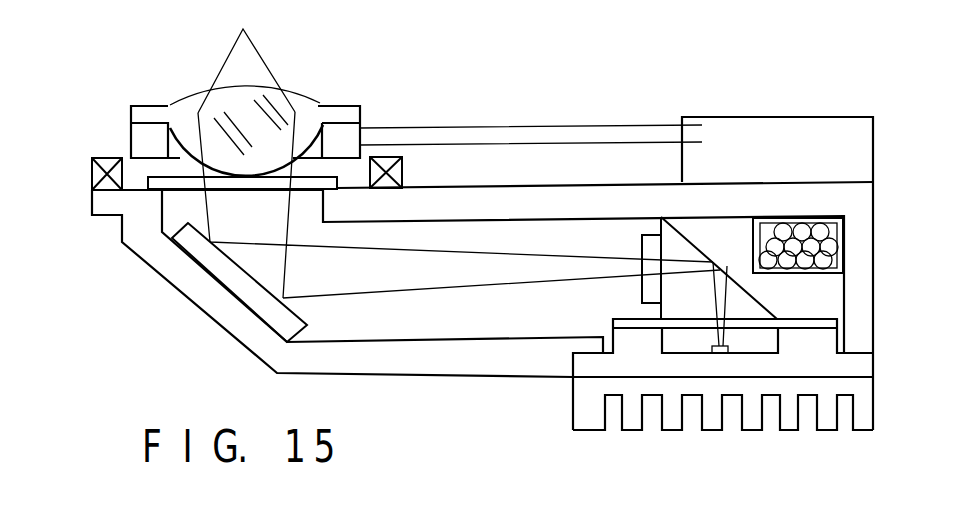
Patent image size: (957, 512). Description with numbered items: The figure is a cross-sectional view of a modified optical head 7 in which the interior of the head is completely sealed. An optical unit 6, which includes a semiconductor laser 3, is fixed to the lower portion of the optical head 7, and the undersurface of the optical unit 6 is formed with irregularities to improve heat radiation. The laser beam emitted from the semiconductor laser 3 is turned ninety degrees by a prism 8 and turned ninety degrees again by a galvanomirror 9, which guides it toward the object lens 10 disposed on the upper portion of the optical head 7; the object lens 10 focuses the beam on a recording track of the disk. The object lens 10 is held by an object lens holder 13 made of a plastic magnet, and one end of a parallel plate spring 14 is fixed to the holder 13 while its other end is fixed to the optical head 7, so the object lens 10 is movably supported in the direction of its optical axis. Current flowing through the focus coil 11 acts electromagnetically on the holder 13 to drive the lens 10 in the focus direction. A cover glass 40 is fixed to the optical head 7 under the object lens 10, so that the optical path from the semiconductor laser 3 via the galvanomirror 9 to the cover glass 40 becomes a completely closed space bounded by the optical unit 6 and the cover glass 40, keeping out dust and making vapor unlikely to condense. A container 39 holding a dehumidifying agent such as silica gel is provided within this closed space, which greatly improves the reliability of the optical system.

The semiconductor laser 3 is at (732, 362).
The optical unit 6 is at (680, 433).
The optical head 7 is at (442, 385).
The prism 8 is at (745, 300).
The galvanomirror 9 is at (233, 278).
The object lens 10 is at (307, 115).
The focus coil 11 is at (93, 176).
The object lens holder 13 is at (138, 137).
The parallel plate spring 14 is at (560, 125).
The container 39 is at (828, 222).
The cover glass 40 is at (178, 183).